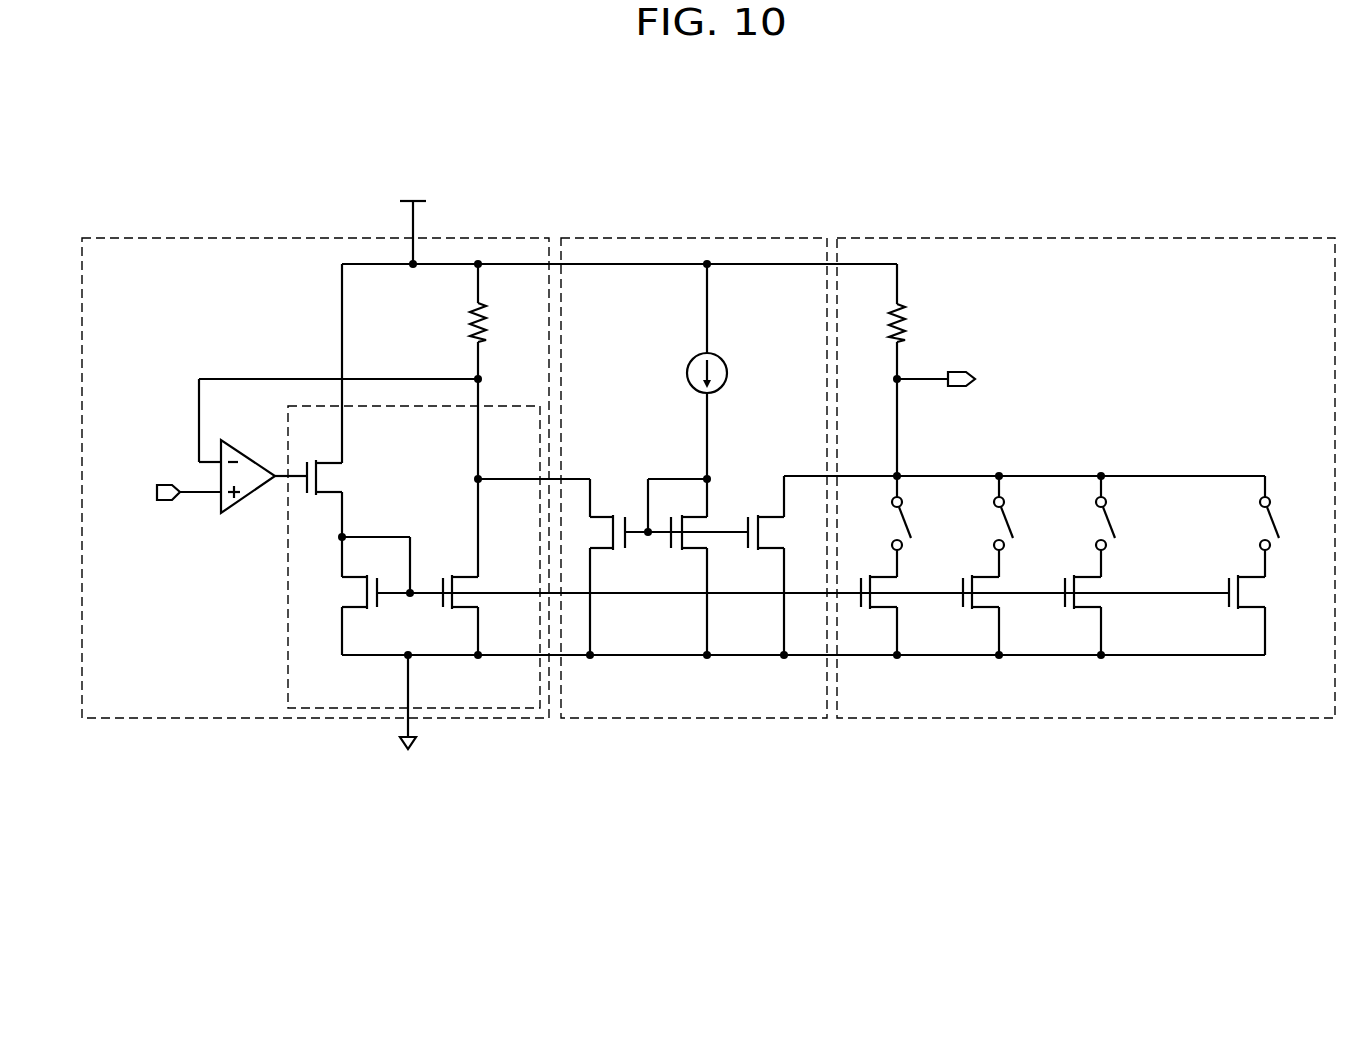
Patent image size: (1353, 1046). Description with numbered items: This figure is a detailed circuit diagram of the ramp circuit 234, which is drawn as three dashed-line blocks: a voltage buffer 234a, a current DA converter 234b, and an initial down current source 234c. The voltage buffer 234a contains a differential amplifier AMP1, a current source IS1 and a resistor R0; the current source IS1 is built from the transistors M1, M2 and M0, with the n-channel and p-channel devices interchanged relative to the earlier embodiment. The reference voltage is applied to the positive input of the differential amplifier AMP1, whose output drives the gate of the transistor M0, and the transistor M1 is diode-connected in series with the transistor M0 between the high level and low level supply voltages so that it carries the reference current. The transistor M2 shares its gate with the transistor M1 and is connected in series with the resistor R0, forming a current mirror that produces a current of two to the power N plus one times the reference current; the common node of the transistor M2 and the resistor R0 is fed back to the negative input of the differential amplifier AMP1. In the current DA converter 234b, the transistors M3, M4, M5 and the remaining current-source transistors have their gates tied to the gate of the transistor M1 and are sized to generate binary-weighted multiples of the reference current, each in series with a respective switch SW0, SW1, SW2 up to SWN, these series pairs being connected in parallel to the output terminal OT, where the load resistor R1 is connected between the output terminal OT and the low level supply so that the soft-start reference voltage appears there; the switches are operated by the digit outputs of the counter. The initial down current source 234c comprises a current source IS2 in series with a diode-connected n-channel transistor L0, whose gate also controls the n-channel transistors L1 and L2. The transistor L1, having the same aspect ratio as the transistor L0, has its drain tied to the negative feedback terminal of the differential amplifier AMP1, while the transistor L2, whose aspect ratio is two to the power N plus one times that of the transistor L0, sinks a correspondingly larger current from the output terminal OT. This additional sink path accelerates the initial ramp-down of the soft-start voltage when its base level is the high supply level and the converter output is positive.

The ramp circuit 234 is at (772, 152).
The voltage buffer 234a is at (339, 238).
The current DA converter 234b is at (1106, 238).
The initial down current source 234c is at (675, 238).
The differential amplifier AMP1 is at (247, 498).
The resistor R0 is at (463, 322).
The load resistor R1 is at (882, 323).
The transistor M0 is at (332, 477).
The transistor M1 is at (349, 592).
The transistor M2 is at (475, 597).
The transistor M3 is at (894, 615).
The transistor M4 is at (996, 615).
The transistor M5 is at (1098, 615).
The current source IS1 is at (288, 627).
The current source IS2 is at (681, 356).
The NMOS transistor L0 is at (704, 524).
The NMOS transistor L1 is at (597, 532).
The NMOS transistor L2 is at (776, 532).
The switch SW0 is at (905, 533).
The switch SW1 is at (1007, 526).
The switch SW2 is at (1109, 526).
The switch SWN is at (1275, 526).
The output terminal OT is at (954, 371).